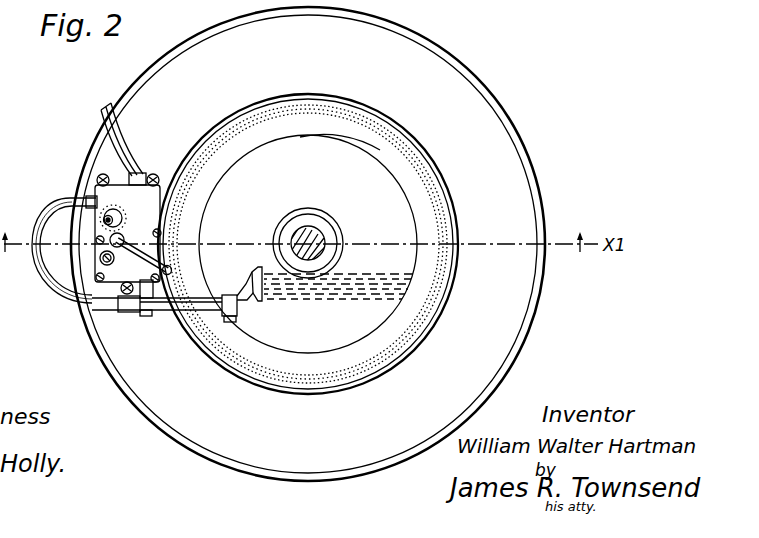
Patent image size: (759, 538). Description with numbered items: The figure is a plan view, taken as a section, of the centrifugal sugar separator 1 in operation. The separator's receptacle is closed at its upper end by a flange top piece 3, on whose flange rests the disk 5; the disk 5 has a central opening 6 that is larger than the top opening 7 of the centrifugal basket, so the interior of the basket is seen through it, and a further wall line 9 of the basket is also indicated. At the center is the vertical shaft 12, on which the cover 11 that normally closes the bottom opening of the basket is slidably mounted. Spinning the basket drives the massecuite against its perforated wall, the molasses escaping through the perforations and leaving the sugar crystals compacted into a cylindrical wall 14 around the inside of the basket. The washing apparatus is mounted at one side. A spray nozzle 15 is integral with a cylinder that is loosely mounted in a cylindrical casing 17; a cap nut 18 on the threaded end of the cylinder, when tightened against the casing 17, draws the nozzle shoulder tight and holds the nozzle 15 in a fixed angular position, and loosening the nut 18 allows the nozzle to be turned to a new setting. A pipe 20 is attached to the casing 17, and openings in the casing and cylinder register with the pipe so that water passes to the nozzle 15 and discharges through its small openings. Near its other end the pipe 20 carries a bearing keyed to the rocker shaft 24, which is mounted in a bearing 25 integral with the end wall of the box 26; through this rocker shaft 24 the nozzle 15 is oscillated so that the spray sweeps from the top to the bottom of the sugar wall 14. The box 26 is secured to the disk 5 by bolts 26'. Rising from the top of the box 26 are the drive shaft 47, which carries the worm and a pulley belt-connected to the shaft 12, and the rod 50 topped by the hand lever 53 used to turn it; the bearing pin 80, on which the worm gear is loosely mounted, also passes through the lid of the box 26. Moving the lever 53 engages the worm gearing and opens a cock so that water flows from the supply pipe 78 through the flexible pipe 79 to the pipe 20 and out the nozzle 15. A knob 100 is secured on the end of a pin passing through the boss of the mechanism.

The centrifugal sugar separator 1 is at (466, 51).
The flange top piece 3 is at (484, 82).
The disk 5 is at (395, 66).
The central opening 6 is at (430, 372).
The top opening 7 is at (351, 110).
The tub wall lining 9 is at (402, 126).
The cover 11 is at (342, 143).
The vertical shaft 12 is at (326, 236).
The cylindrical wall of sugar 14 is at (213, 157).
The spray nozzle 15 is at (254, 279).
The casing 17 is at (241, 310).
The cap nut 18 is at (230, 317).
The pipe 20 is at (178, 311).
The rocker shaft 24 is at (146, 313).
The bearing 25 is at (168, 292).
The box 26 is at (151, 233).
The bolts 26' is at (139, 238).
The drive shaft 47 is at (107, 260).
The rod 50 is at (122, 238).
The hand lever 53 is at (150, 246).
The pipe 78 is at (100, 108).
The flexible pipe 79 is at (40, 264).
The bearing pin 80 is at (112, 219).
The knob 100 is at (103, 218).